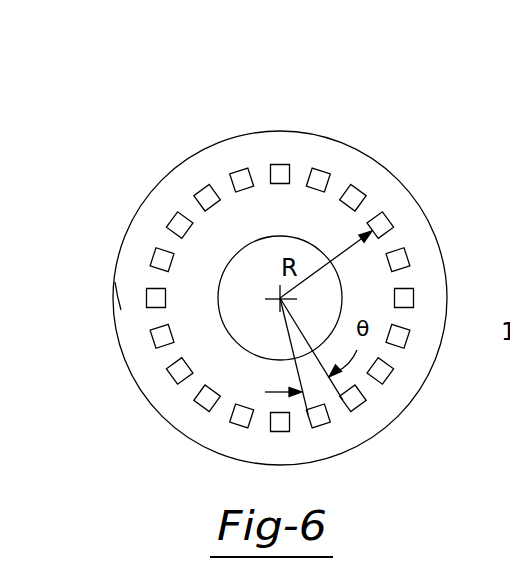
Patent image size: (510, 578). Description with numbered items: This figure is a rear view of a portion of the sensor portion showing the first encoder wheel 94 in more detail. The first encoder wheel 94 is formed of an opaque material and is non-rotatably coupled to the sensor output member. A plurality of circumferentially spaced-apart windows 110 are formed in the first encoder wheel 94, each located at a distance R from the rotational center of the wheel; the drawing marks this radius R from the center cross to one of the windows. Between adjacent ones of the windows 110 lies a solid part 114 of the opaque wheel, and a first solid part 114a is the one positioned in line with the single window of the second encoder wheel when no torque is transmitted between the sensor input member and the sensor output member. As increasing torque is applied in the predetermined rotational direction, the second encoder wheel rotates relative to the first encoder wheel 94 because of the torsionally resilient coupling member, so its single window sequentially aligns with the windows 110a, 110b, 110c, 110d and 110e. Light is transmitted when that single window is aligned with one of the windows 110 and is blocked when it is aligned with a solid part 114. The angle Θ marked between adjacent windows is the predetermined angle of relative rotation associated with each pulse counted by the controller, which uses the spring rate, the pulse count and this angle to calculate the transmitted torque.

The first encoder wheel 94 is at (388, 156).
The windows 110 is at (400, 339).
The window 110a is at (160, 256).
The window 110b is at (178, 221).
The window 110c is at (207, 190).
The window 110d is at (240, 170).
The window 110e is at (285, 170).
The solid part 114 is at (181, 405).
The first solid part 114a is at (137, 285).